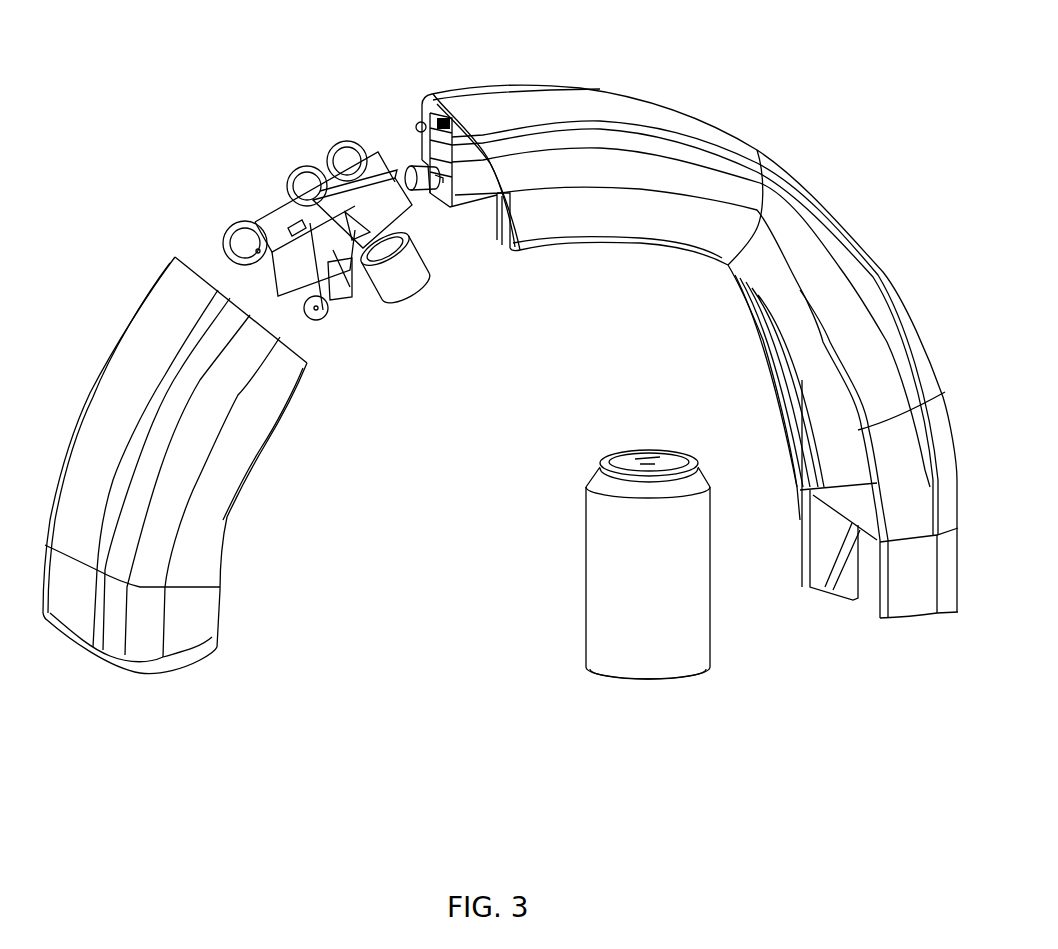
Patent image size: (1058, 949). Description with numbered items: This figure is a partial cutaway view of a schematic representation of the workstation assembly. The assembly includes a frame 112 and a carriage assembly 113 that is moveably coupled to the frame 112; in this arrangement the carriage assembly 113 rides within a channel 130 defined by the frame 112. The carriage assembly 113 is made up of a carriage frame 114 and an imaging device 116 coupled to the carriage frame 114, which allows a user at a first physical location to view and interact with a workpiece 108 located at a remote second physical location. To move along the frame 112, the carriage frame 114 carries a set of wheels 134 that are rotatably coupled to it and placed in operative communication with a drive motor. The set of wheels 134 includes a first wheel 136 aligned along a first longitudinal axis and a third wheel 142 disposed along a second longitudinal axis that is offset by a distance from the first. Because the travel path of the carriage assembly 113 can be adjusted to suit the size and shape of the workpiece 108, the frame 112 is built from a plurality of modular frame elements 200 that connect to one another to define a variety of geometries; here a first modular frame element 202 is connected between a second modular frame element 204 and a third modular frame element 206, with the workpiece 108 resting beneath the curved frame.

The workpiece 108 is at (653, 433).
The frame 112 is at (805, 190).
The carriage assembly 113 is at (373, 117).
The carriage frame 114 is at (275, 217).
The imaging device 116 is at (415, 292).
The channel 130 is at (485, 233).
The set of wheels 134 is at (227, 237).
The first wheel 136 is at (343, 153).
The third wheel 142 is at (305, 175).
The plurality of modular frame elements 200 is at (637, 77).
The first modular frame element 202 is at (887, 272).
The second modular frame element 204 is at (682, 115).
The third modular frame element 206 is at (875, 610).